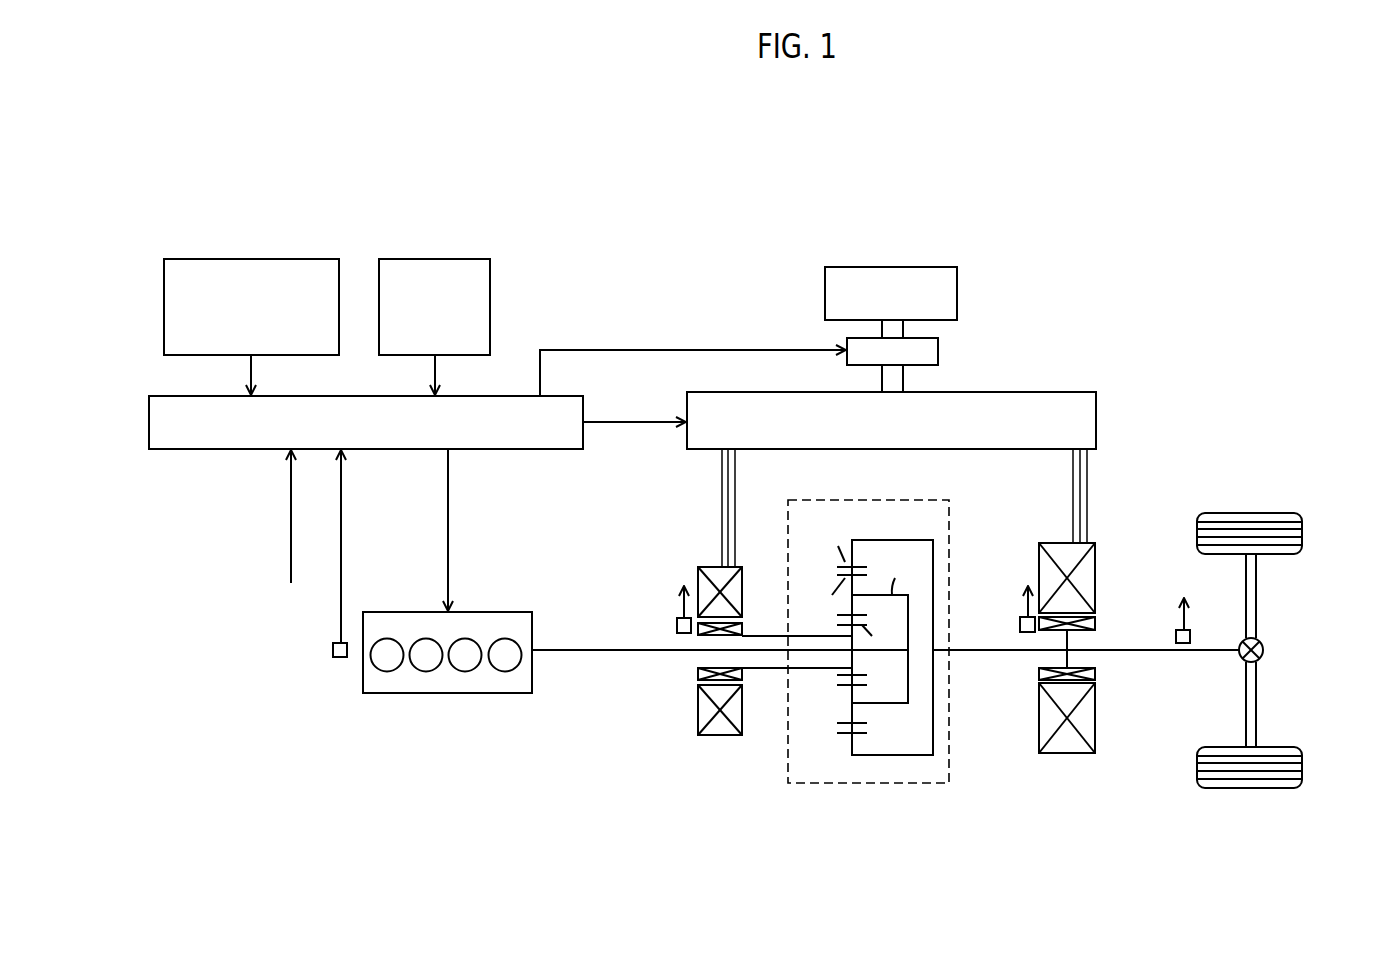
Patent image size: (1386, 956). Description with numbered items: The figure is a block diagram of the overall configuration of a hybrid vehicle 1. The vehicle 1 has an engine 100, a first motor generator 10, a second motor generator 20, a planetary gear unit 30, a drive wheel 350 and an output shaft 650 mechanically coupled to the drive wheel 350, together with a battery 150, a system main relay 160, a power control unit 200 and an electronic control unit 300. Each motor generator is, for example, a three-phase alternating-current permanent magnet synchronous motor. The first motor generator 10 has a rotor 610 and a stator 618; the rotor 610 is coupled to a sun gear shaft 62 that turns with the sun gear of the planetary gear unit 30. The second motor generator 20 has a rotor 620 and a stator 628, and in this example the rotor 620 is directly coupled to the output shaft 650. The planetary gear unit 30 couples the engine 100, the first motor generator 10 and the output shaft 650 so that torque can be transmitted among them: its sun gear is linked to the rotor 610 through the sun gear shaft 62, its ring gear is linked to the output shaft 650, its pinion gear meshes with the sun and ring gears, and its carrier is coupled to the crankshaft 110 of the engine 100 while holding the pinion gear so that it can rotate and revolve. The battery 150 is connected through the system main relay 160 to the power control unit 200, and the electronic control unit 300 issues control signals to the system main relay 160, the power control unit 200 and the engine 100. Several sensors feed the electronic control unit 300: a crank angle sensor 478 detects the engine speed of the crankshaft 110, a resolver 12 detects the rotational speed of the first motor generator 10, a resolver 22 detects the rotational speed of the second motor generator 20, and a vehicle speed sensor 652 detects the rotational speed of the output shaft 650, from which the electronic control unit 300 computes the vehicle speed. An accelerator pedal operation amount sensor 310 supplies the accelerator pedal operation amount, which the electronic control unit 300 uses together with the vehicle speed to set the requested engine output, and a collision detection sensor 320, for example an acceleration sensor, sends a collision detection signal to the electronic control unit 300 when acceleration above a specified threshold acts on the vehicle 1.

The vehicle 1 is at (1156, 258).
The motor generator 10 is at (707, 567).
The resolver 12 is at (676, 626).
The motor generator 20 is at (1053, 543).
The resolver 22 is at (1019, 624).
The planetary gear unit 30 is at (903, 500).
The sun gear shaft 62 is at (765, 633).
The engine 100 is at (515, 693).
The crankshaft 110 is at (565, 651).
The battery 150 is at (957, 293).
The system main relay 160 is at (938, 351).
The power control unit 200 is at (1024, 392).
The electronic control unit 300 is at (553, 396).
The accelerator pedal operation amount sensor 310 is at (323, 259).
The collision detection sensor 320 is at (471, 259).
The drive wheel 350 is at (1272, 512).
The crank angle sensor 478 is at (340, 657).
The rotor 610 is at (742, 680).
The stator 618 is at (742, 727).
The rotor 620 is at (1039, 680).
The stator 628 is at (1039, 735).
The output shaft 650 is at (1207, 655).
The vehicle speed sensor 652 is at (1195, 634).